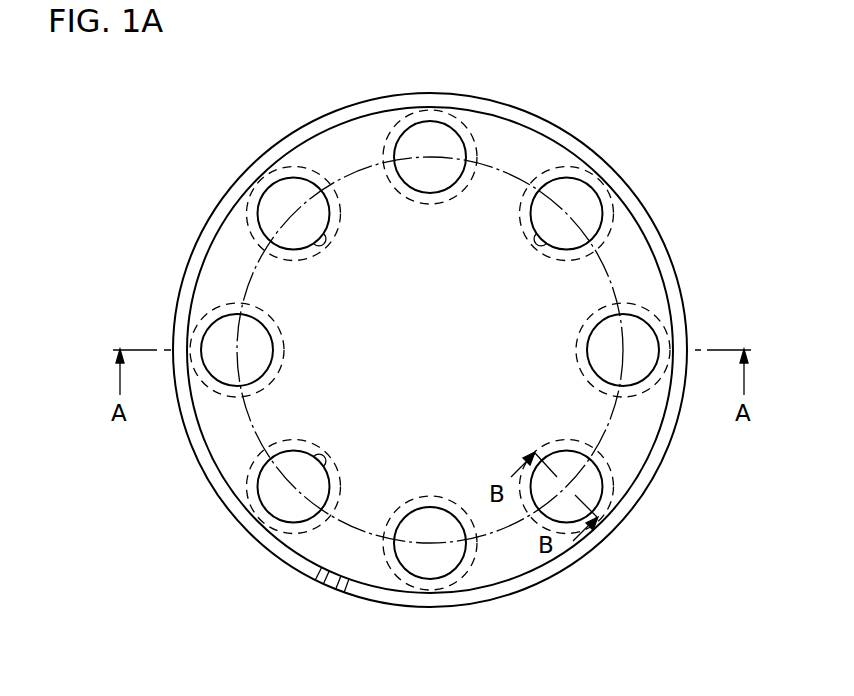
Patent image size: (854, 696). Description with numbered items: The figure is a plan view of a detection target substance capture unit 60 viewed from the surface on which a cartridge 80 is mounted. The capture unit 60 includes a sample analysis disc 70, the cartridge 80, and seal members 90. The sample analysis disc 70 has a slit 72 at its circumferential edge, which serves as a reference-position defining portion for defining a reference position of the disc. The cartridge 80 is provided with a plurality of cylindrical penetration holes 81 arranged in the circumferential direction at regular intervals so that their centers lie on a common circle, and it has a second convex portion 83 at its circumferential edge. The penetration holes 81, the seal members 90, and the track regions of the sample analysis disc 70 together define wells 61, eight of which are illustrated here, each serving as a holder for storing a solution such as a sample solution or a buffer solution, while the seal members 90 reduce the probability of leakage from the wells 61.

The detection target substance capture unit 60 is at (540, 95).
The well 61 is at (434, 122).
The sample analysis disc 70 is at (655, 213).
The slit 72 is at (326, 586).
The cartridge 80 is at (655, 259).
The penetration hole 81 is at (320, 238).
The second convex portion 83 is at (338, 584).
The seal member 90 is at (265, 184).